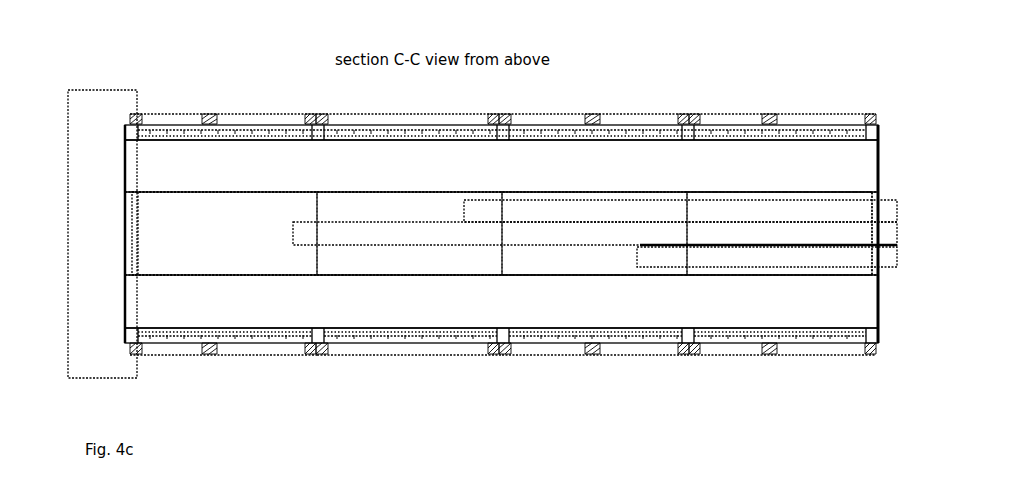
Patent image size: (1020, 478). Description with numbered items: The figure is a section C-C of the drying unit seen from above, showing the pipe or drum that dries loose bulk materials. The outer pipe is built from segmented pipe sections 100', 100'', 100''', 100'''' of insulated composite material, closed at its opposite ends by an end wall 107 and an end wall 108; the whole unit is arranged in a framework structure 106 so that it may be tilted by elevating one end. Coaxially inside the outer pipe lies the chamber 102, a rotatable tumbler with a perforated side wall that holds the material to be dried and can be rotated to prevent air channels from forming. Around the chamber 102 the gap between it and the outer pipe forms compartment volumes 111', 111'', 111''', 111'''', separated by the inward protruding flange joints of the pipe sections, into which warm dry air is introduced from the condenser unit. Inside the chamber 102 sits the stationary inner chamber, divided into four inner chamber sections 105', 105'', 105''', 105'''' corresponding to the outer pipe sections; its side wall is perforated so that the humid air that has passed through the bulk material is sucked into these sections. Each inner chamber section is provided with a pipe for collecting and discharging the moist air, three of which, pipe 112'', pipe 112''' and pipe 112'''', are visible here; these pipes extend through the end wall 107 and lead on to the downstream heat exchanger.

The chamber 102 is at (409, 309).
The framework structure 106 is at (232, 114).
The end wall 107 is at (879, 166).
The end wall 108 is at (124, 178).
The inner chamber section 105' is at (785, 297).
The inner chamber section 105'' is at (594, 233).
The inner chamber section 105''' is at (409, 233).
The inner chamber section 105'''' is at (224, 233).
The pipe 112'' is at (767, 257).
The pipe 112''' is at (680, 211).
The pipe 112'''' is at (595, 233).
The segmented pipe section 100' is at (780, 365).
The segmented pipe section 100'' is at (595, 365).
The segmented pipe section 100''' is at (410, 365).
The segmented pipe section 100'''' is at (225, 365).
The compartment volume 111' is at (781, 387).
The compartment volume 111'' is at (594, 387).
The compartment volume 111''' is at (409, 387).
The compartment volume 111'''' is at (223, 387).